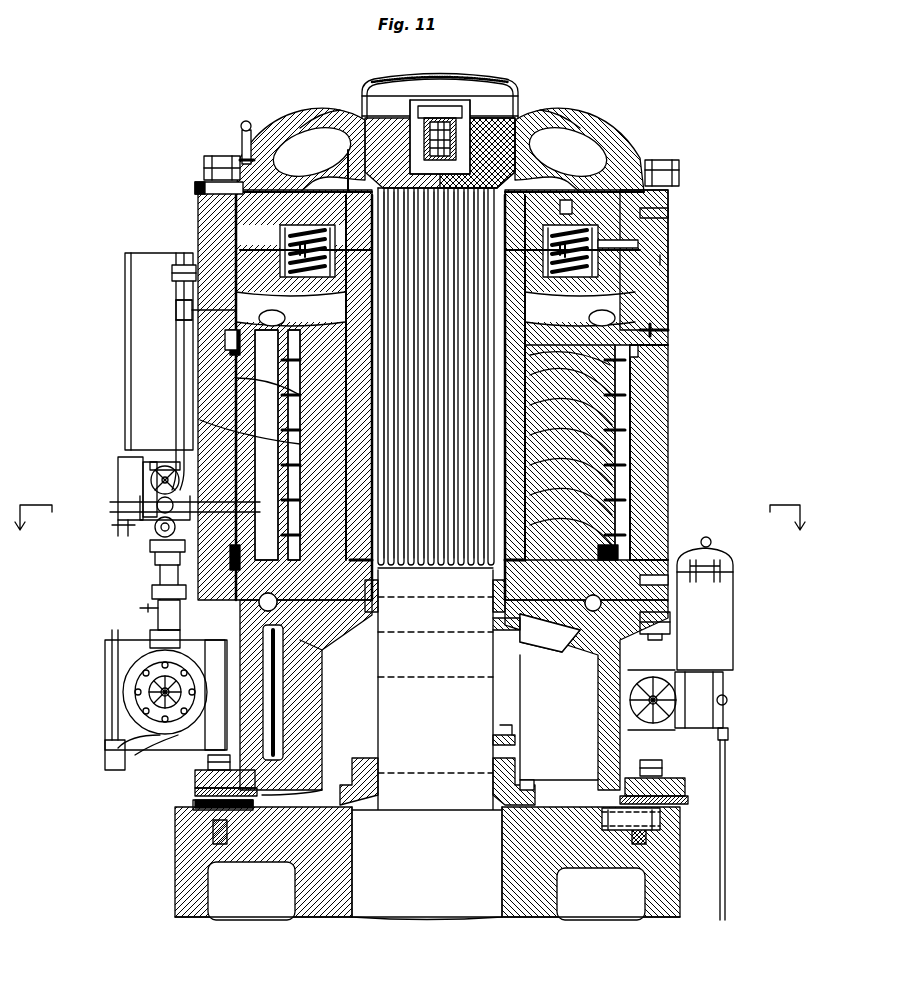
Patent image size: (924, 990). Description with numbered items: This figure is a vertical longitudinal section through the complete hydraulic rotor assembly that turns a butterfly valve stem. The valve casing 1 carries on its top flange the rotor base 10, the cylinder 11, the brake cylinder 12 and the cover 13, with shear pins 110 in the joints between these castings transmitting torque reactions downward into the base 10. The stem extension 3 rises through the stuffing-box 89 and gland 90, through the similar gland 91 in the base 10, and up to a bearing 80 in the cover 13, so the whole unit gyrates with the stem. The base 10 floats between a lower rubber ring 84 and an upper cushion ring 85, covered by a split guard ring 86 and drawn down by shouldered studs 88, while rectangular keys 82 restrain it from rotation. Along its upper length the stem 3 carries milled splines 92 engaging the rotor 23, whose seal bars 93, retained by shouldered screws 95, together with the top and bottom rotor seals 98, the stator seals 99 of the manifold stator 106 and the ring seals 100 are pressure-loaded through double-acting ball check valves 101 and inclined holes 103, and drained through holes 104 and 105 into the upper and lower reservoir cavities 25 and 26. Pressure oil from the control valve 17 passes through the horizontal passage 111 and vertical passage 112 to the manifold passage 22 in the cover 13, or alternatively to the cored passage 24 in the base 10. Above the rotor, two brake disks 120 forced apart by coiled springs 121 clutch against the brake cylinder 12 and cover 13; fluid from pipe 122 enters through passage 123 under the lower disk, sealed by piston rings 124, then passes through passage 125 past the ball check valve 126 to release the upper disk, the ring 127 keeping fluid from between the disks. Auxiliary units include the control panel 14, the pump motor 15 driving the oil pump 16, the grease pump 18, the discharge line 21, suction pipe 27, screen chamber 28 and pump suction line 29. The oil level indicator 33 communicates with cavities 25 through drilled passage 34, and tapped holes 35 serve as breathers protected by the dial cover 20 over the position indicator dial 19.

The casing 1 is at (175, 858).
The stem extension 3 is at (478, 114).
The base 10 is at (645, 390).
The cylinder 11 is at (230, 360).
The brake cylinder 12 is at (698, 278).
The cover 13 is at (668, 196).
The control panel 14 is at (125, 290).
The main pump motor 15 is at (128, 652).
The main oil pump 16 is at (140, 685).
The rotor control valve 17 is at (122, 466).
The high-pressure grease pump 18 is at (730, 700).
The position indicator dial 19 is at (362, 96).
The dial cover 20 is at (396, 78).
The discharge line 21 is at (112, 570).
The upper manifold passage 22 is at (176, 310).
The rotor element 23 is at (288, 410).
The cored passage 24 is at (272, 612).
The upper reservoir cavities 25 is at (330, 172).
The lower reservoir cavities 26 is at (318, 636).
The suction pipe 27 is at (276, 676).
The screen chamber 28 is at (150, 548).
The pump suction line 29 is at (152, 598).
The oil level indicator 33 is at (242, 138).
The drilled passage 34 is at (282, 132).
The tapped holes 35 is at (360, 126).
The bearing 80 is at (478, 122).
The rectangular keys 82 is at (660, 814).
The lower rubber ring 84 is at (200, 806).
The upper cushion ring 85 is at (195, 792).
The split ring metal guard 86 is at (195, 776).
The shouldered studs 88 is at (222, 844).
The lower stuffing-box 89 is at (516, 775).
The gland 90 is at (516, 738).
The gland 91 is at (520, 680).
The milled splines 92 is at (430, 585).
The seal bars 93 is at (660, 380).
The shouldered screws 95 is at (288, 432).
The top and bottom rotor seals 98 is at (640, 352).
The stator seals 99 is at (288, 380).
The rotor ring seals 100 is at (236, 350).
The double-acting ball check valves 101 is at (640, 502).
The inclined drilled holes 103 is at (230, 338).
The drilled hole 104 is at (640, 368).
The drilled hole 105 is at (505, 570).
The manifold stator 106 is at (236, 378).
The shear pins 110 is at (668, 210).
The horizontal passage 111 is at (140, 515).
The vertical passage 112 is at (200, 420).
The brake disks 120 is at (285, 250).
The coiled springs 121 is at (285, 272).
The pipe 122 is at (176, 402).
The horizontal drilled passage 123 is at (172, 272).
The piston rings 124 is at (349, 165).
The passage 125 is at (195, 190).
The ball check valve 126 is at (204, 166).
The ring 127 is at (640, 244).